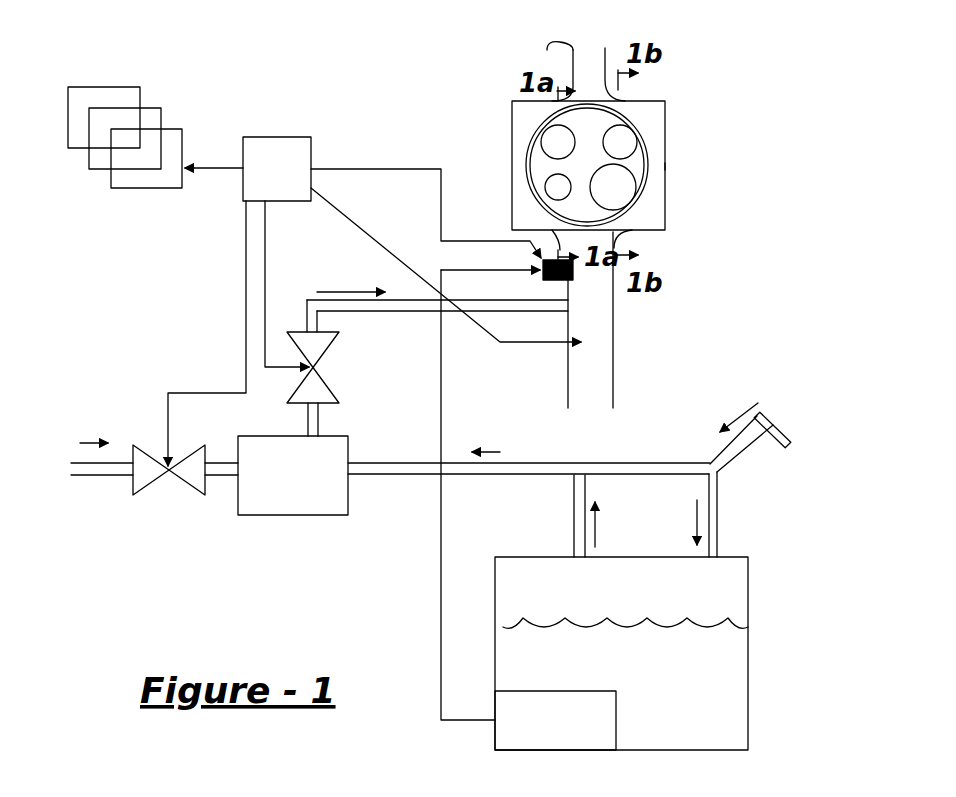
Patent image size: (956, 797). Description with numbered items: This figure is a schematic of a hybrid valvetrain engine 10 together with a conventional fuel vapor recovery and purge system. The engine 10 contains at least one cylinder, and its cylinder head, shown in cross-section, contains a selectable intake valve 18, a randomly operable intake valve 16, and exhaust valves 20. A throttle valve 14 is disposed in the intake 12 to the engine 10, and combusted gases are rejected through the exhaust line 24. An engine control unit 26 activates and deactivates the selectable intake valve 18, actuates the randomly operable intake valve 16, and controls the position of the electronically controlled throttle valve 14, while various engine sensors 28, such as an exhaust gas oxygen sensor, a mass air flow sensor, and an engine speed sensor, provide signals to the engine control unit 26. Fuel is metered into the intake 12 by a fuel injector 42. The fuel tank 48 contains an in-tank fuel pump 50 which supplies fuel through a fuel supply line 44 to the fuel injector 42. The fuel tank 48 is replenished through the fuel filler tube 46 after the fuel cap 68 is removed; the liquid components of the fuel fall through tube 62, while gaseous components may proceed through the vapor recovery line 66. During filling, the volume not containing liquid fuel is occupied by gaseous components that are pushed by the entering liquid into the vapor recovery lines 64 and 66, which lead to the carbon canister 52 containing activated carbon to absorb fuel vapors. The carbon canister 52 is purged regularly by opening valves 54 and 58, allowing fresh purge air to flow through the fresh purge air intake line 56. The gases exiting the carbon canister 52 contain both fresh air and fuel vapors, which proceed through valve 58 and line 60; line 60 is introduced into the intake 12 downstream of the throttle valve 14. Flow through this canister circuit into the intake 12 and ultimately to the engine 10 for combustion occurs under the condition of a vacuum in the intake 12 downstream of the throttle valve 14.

The engine 10 is at (667, 163).
The intake 12 is at (668, 307).
The throttle valve 14 is at (640, 205).
The randomly operable intake valve 16 is at (547, 178).
The selectable intake valve 18 is at (640, 168).
The exhaust valves 20 is at (645, 130).
The exhaust line 24 is at (547, 50).
The engine control unit 26 is at (260, 137).
The engine sensors 28 is at (142, 188).
The fuel injector 42 is at (543, 277).
The fuel supply line 44 is at (441, 640).
The fuel filler tube 46 is at (725, 470).
The fuel tank 48 is at (748, 637).
The in-tank fuel pump 50 is at (565, 727).
The carbon canister 52 is at (293, 475).
The valve 54 is at (169, 472).
The fresh purge air intake line 56 is at (97, 477).
The valve 58 is at (316, 365).
The line 60 is at (412, 315).
The tube 62 is at (718, 548).
The vapor recovery line 64 is at (574, 500).
The vapor recovery line 66 is at (545, 462).
The fuel cap 68 is at (788, 440).